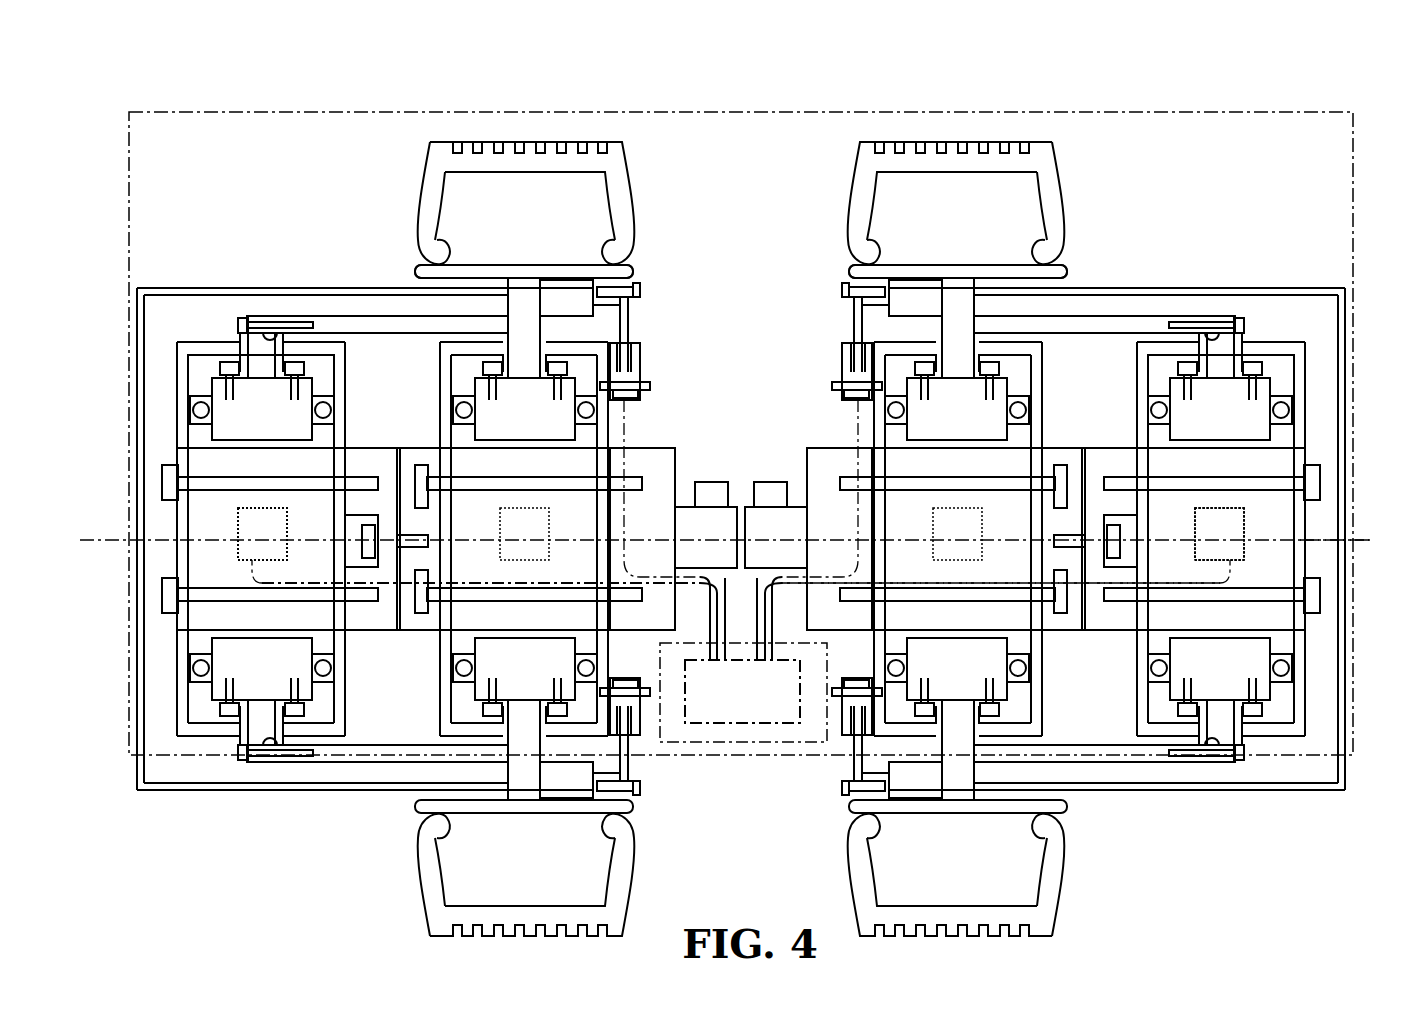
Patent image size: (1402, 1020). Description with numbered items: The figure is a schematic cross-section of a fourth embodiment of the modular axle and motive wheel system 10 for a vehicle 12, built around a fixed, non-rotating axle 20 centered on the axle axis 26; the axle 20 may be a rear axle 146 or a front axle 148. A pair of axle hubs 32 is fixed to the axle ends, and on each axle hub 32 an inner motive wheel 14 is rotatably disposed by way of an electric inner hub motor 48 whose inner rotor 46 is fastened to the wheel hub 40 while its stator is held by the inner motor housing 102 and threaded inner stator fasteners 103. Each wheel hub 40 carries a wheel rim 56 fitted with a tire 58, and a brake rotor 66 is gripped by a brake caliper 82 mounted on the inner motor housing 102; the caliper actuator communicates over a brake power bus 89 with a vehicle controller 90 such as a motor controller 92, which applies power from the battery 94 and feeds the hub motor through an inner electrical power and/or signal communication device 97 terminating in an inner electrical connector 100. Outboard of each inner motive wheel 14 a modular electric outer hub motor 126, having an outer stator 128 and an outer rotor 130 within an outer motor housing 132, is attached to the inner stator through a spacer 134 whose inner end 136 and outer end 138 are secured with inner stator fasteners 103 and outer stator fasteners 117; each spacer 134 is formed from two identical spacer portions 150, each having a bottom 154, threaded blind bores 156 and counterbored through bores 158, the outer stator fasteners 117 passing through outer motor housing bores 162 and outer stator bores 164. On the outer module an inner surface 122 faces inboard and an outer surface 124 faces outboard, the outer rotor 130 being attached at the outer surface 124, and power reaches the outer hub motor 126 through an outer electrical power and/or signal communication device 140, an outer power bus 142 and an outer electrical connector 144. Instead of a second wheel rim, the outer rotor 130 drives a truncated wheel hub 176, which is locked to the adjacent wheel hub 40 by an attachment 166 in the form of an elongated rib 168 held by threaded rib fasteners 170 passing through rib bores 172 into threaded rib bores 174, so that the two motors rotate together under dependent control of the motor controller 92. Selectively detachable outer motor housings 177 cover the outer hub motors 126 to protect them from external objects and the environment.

The modular axle and motive wheel system 10 is at (778, 238).
The vehicle 12 is at (750, 106).
The inner motive wheel 14 is at (628, 140).
The axle 20 is at (800, 490).
The axle axis 26 is at (1357, 538).
The axle hub 32 is at (823, 446).
The wheel hub 40 is at (548, 290).
The inner rotor 46 is at (628, 330).
The electric inner hub motor 48 is at (615, 740).
The wheel rim 56 is at (513, 265).
The tire 58 is at (635, 160).
The brake rotor 66 is at (845, 305).
The brake caliper 82 is at (643, 360).
The brake power bus 89 is at (690, 560).
The vehicle controller 90 is at (745, 725).
The motor controller 92 is at (742, 691).
The battery 94 is at (680, 745).
The inner electrical power and/or signal communication device 97 is at (595, 595).
The inner electrical connector 100 is at (555, 525).
The inner motor housing 102 is at (540, 735).
The threaded inner stator fastener 103 is at (935, 472).
The outer stator fastener 117 is at (215, 470).
The inner surface 122 is at (305, 742).
The outer surface 124 is at (250, 775).
The electric outer hub motor 126 is at (173, 715).
The outer stator 128 is at (160, 645).
The outer rotor 130 is at (312, 385).
The outer motor housing 132 is at (170, 562).
The spacer 134 is at (380, 446).
The inner end 136 is at (455, 505).
The outer end 138 is at (350, 500).
The outer electrical power and/or signal communication device 140 is at (245, 567).
The outer power bus 142 is at (262, 534).
The outer electrical connector 144 is at (232, 517).
The rear axle 146 is at (742, 691).
The front axle 148 is at (742, 691).
The spacer portion 150 is at (410, 660).
The bottom 154 is at (420, 463).
The threaded blind bore 156 is at (362, 600).
The counterbored through bore 158 is at (372, 545).
The outer motor housing bore 162 is at (170, 598).
The outer stator bore 164 is at (290, 605).
The attachment 166 is at (360, 335).
The elongated rib 168 is at (400, 317).
The threaded rib fastener 170 is at (500, 335).
The rib bore 172 is at (250, 333).
The threaded rib bore 174 is at (285, 325).
The truncated wheel hub 176 is at (237, 325).
The outer motor housing 177 is at (205, 287).